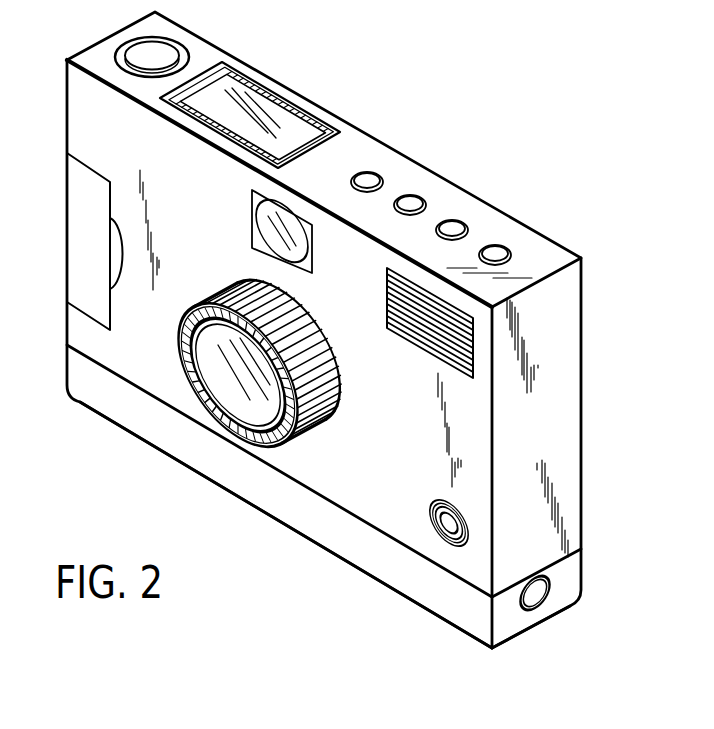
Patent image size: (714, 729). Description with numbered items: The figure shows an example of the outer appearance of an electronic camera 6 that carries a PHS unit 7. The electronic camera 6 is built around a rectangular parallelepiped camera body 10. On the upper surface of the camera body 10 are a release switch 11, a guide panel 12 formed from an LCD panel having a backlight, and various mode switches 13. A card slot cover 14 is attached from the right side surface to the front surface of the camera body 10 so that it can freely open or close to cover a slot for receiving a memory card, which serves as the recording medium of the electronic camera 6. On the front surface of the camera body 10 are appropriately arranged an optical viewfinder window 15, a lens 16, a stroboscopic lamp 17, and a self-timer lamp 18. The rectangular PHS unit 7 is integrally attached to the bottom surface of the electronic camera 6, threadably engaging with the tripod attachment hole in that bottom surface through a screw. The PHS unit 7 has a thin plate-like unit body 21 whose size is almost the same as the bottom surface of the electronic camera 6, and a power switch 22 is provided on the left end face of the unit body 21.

The electronic camera 6 is at (414, 121).
The PHS unit 7 is at (227, 482).
The camera body 10 is at (582, 283).
The release switch 11 is at (165, 55).
The guide panel 12 is at (262, 107).
The mode switches 13 is at (435, 212).
The card slot cover 14 is at (95, 187).
The optical viewfinder window 15 is at (253, 228).
The lens 16 is at (203, 355).
The stroboscopic lamp 17 is at (403, 337).
The self-timer lamp 18 is at (435, 508).
The unit body 21 is at (443, 612).
The power switch 22 is at (538, 595).